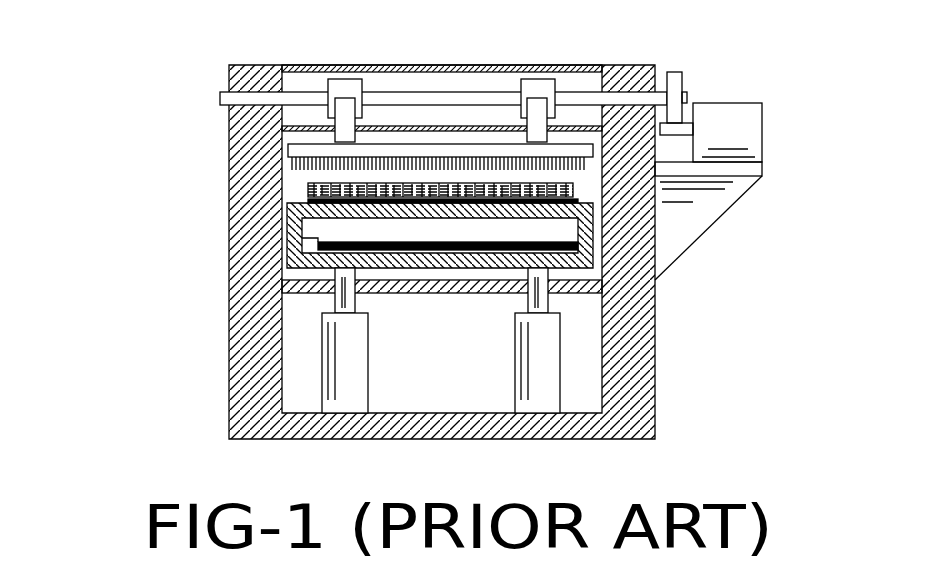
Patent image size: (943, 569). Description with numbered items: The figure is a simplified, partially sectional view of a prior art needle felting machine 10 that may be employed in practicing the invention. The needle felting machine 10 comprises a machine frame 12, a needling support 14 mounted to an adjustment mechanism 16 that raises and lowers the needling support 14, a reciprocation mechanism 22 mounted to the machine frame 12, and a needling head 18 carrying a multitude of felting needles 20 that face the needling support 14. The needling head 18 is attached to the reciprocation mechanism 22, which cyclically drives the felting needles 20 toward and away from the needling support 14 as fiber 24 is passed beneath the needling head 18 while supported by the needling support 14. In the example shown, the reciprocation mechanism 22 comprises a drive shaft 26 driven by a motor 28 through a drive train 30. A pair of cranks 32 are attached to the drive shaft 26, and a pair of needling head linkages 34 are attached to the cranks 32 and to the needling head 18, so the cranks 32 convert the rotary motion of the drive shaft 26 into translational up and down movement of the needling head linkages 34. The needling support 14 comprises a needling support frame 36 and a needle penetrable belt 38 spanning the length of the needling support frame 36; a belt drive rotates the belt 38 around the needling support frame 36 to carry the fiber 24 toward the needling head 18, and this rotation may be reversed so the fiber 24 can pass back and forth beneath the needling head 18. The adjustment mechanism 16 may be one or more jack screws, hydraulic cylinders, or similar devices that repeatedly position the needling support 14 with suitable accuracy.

The needle felting machine 10 is at (446, 227).
The machine frame 12 is at (245, 293).
The needling support 14 is at (285, 255).
The adjustment mechanism 16 is at (355, 359).
The needling head 18 is at (293, 152).
The felting needles 20 is at (297, 163).
The reciprocation mechanism 22 is at (430, 81).
The fiber 24 is at (310, 188).
The drive shaft 26 is at (402, 98).
The motor 28 is at (748, 122).
The drive train 30 is at (673, 83).
The cranks 32 is at (335, 85).
The needling head linkages 34 is at (340, 105).
The needling support frame 36 is at (290, 225).
The needle penetrable belt 38 is at (308, 199).